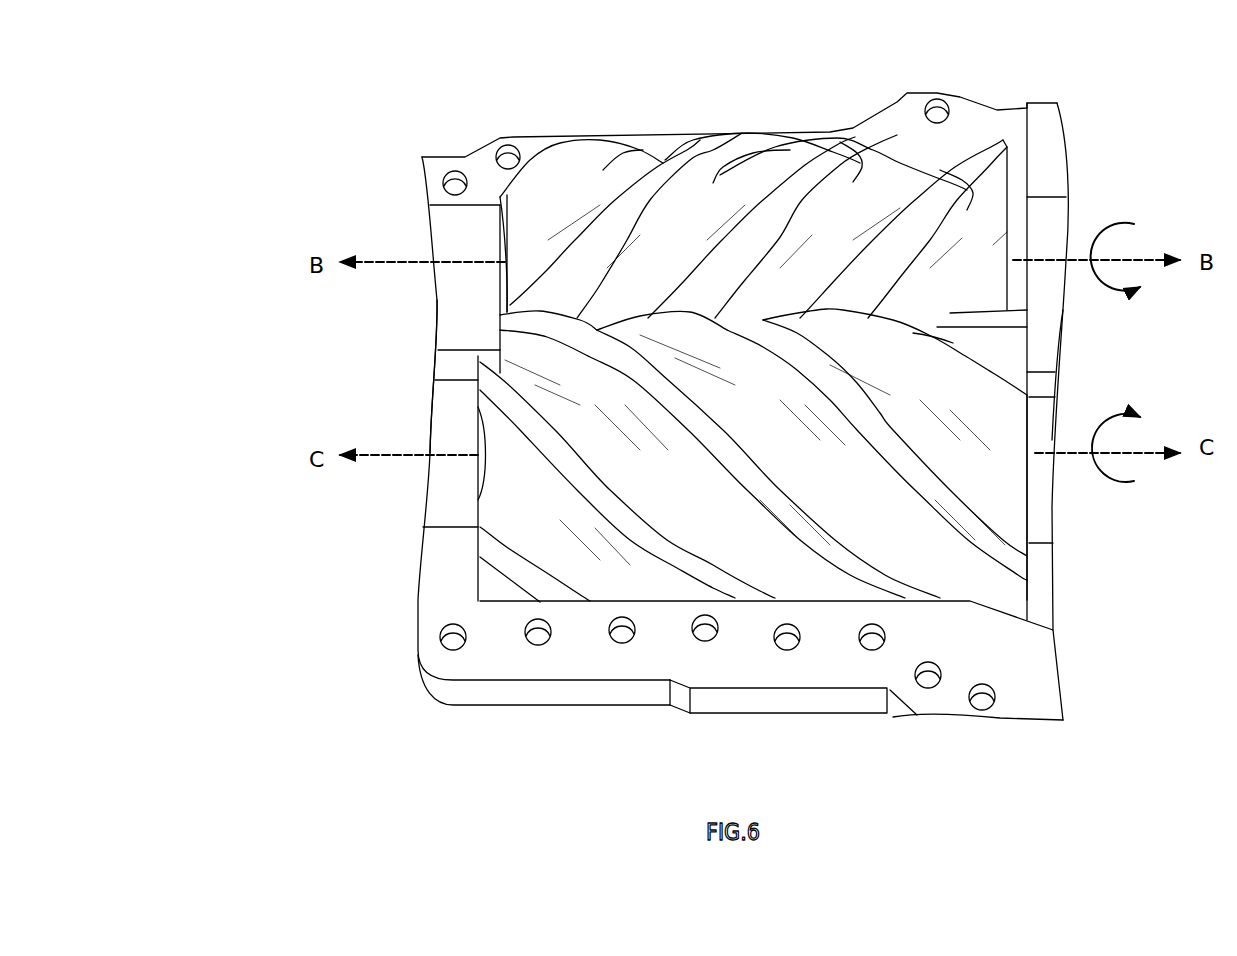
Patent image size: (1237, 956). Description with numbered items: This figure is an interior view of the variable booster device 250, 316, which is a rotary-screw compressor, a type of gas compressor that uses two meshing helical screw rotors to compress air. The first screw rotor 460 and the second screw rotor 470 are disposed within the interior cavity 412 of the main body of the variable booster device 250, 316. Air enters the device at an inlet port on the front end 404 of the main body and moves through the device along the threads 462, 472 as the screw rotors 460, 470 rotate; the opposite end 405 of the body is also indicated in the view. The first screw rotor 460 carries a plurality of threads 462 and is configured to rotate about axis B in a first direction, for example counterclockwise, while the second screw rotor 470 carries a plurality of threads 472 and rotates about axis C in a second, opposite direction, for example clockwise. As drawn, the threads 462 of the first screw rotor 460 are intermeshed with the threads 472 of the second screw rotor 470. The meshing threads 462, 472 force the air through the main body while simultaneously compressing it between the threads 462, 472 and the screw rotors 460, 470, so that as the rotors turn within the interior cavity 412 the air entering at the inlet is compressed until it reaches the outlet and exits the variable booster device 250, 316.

The variable booster device 250 is at (694, 418).
The variable booster device 316 is at (253, 198).
The interior cavity 412 is at (312, 137).
The front end 404 is at (363, 362).
The second end of rotor housing 405 is at (1117, 347).
The first screw rotor 460 is at (572, 177).
The threads 462 is at (868, 185).
The second screw rotor 470 is at (528, 578).
The threads 472 is at (552, 590).